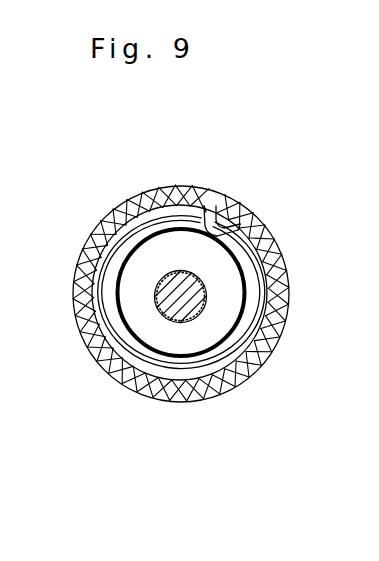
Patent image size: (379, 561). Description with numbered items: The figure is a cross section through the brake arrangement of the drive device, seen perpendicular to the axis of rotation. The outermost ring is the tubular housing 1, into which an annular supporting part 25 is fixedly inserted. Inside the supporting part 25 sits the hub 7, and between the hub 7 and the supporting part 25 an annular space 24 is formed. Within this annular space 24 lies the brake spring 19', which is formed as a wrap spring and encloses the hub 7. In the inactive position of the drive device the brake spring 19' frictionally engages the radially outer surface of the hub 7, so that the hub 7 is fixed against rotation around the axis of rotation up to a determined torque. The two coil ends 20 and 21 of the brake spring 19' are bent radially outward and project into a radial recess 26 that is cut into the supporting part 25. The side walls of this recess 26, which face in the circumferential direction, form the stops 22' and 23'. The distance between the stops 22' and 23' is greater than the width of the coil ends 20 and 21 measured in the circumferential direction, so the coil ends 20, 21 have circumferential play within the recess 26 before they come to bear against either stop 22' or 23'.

The housing 1 is at (121, 383).
The hub 7 is at (181, 346).
The brake spring 19' is at (194, 373).
The coil end 20 is at (198, 205).
The coil end 21 is at (231, 226).
The stop 22' is at (171, 280).
The stop 23' is at (304, 216).
The annular space 24 is at (153, 378).
The supporting part 25 is at (250, 360).
The radial recess 26 is at (216, 212).